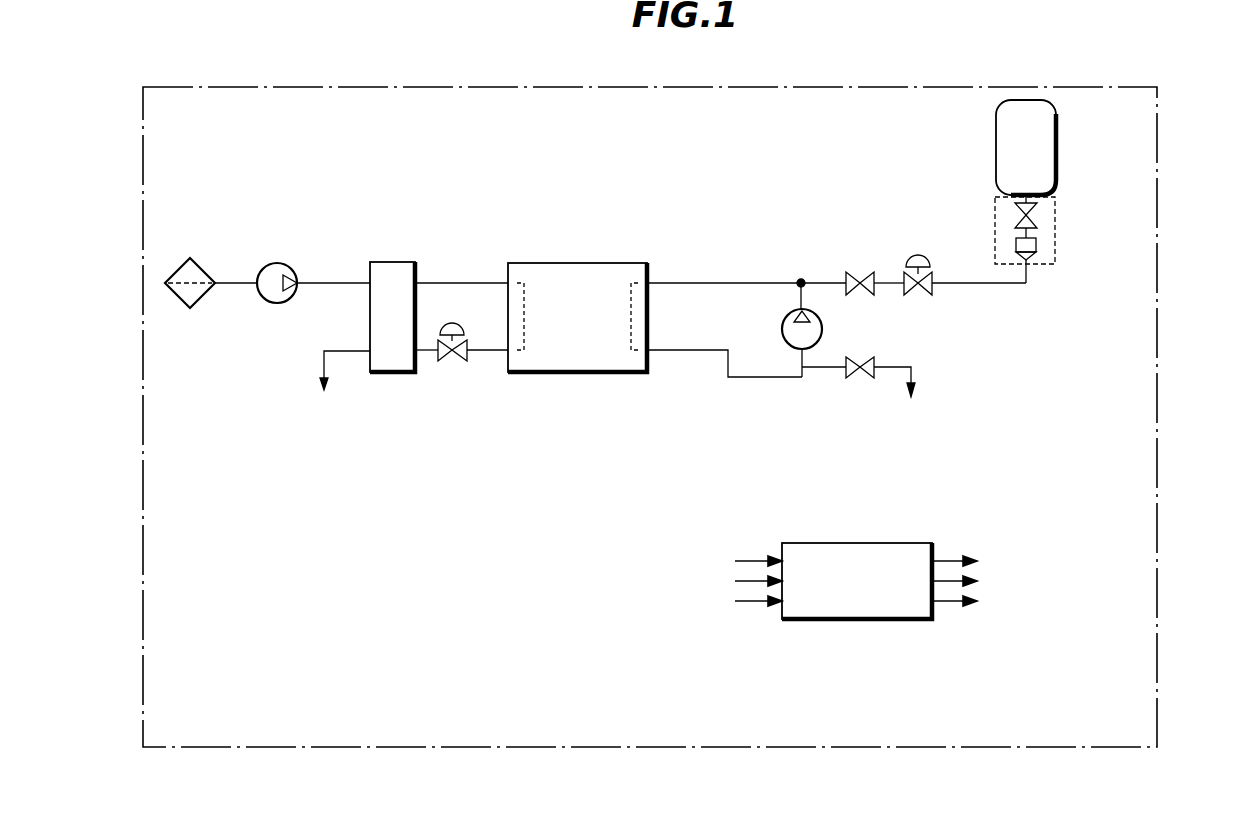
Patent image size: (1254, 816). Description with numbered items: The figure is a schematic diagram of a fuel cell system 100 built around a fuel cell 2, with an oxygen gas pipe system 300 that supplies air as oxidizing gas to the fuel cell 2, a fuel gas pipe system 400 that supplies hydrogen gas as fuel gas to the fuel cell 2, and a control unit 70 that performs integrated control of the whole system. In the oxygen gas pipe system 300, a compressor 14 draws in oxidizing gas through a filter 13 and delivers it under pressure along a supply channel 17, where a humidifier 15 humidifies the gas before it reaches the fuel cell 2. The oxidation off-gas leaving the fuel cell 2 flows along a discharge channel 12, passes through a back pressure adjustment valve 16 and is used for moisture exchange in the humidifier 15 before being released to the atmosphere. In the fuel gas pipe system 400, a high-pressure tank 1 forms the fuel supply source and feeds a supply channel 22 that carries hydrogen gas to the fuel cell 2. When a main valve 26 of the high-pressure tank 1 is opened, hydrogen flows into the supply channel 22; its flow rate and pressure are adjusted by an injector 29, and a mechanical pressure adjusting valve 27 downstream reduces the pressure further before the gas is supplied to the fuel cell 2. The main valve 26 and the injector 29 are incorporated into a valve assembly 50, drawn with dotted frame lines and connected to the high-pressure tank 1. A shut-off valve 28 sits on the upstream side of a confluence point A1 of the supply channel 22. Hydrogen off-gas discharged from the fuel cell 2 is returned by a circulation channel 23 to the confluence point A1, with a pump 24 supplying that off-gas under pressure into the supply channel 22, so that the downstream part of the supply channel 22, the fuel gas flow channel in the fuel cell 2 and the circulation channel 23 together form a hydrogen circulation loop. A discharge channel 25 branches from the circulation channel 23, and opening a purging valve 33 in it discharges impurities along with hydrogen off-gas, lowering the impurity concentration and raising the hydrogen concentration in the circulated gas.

The fuel cell system 100 is at (1158, 143).
The high-pressure tank 1 is at (1056, 147).
The fuel cell 2 is at (545, 372).
The discharge channel 12 is at (340, 352).
The filter 13 is at (202, 268).
The compressor 14 is at (274, 263).
The humidifier 15 is at (390, 372).
The back pressure adjustment valve 16 is at (455, 323).
The supply channel 17 is at (443, 282).
The supply channel 22 is at (1035, 283).
The circulation channel 23 is at (760, 377).
The pump 24 is at (782, 329).
The discharge channel 25 is at (921, 372).
The main valve 26 is at (1038, 222).
The mechanical pressure adjusting valve 27 is at (932, 276).
The shut-off valve 28 is at (868, 272).
The injector 29 is at (1036, 247).
The purging valve 33 is at (866, 376).
The valve assembly 50 is at (1055, 207).
The control unit 70 is at (905, 543).
The oxygen gas pipe system 300 is at (403, 234).
The fuel gas pipe system 400 is at (938, 196).
The confluence point A1 is at (801, 280).